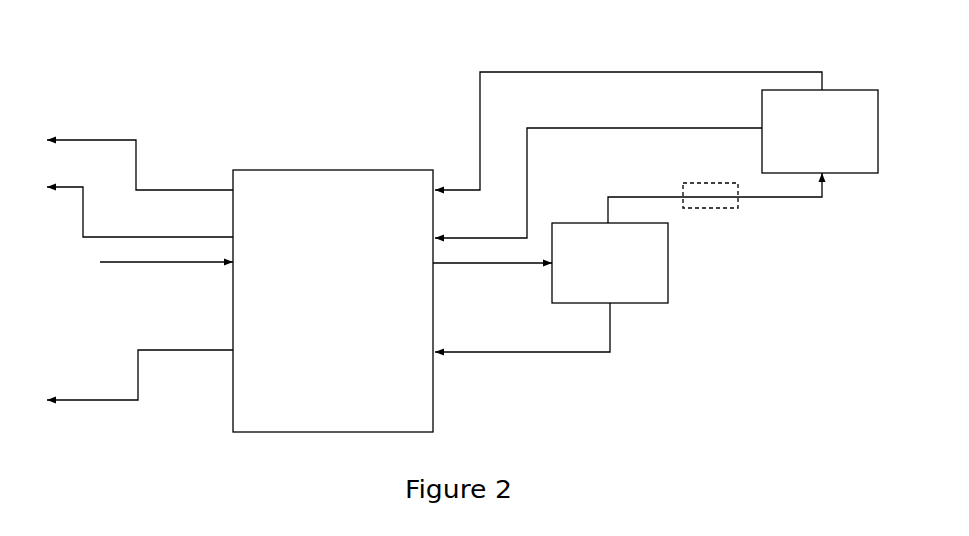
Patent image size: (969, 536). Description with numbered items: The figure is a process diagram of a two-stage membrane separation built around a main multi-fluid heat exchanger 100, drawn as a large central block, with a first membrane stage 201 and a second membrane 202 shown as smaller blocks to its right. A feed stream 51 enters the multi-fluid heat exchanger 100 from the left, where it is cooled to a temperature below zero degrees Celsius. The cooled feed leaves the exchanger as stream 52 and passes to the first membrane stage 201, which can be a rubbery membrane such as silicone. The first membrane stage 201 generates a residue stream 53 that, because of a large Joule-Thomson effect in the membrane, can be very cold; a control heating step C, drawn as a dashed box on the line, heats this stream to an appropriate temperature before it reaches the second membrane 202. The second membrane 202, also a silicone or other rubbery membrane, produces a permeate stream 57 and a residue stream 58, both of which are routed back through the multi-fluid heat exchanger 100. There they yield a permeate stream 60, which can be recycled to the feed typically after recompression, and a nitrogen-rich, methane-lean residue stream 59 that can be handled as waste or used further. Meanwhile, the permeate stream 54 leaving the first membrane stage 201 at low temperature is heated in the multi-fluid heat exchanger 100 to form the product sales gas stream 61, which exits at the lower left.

The multi-fluid heat exchanger 100 is at (333, 301).
The first membrane stage 201 is at (610, 263).
The second membrane 202 is at (820, 131).
The heating step C is at (725, 209).
The feed stream 51 is at (148, 267).
The cooled feed stream 52 is at (500, 267).
The residue stream 53 is at (627, 197).
The permeate stream 54 is at (551, 357).
The permeate stream 57 is at (607, 128).
The residue stream 58 is at (660, 72).
The residue stream 59 is at (156, 190).
The permeate stream 60 is at (108, 237).
The product stream 61 is at (97, 403).